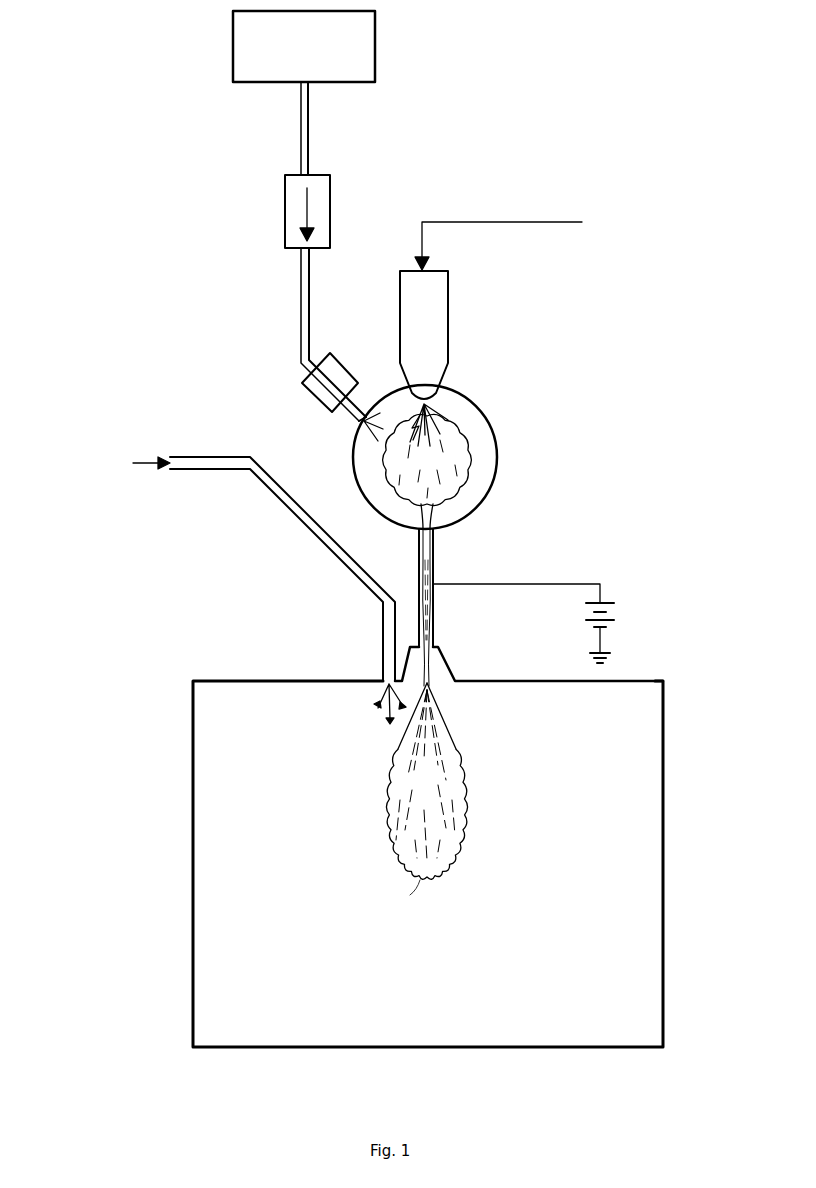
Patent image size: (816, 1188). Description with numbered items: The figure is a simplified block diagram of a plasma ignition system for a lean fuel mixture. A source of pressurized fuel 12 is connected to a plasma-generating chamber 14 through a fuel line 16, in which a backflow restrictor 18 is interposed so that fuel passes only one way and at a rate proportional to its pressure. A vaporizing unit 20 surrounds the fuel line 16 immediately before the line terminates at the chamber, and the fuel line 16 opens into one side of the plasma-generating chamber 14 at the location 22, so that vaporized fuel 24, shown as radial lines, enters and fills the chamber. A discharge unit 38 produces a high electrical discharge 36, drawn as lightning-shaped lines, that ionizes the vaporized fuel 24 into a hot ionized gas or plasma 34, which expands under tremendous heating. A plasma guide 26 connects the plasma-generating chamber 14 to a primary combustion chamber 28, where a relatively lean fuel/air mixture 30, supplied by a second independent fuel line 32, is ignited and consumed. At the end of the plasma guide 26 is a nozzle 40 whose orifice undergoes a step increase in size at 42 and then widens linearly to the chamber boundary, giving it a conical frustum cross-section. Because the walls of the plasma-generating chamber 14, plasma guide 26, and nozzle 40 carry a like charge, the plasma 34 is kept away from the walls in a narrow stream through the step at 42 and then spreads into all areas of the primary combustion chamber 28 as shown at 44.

The source of pressurized fuel 12 is at (376, 50).
The plasma-generating chamber 14 is at (498, 430).
The fuel line 16 is at (301, 297).
The backflow restrictor 18 is at (285, 214).
The vaporizing unit 20 is at (312, 398).
The fuel line opening 22 is at (350, 426).
The vaporized fuel 24 is at (380, 421).
The plasma guide 26 is at (434, 560).
The primary combustion chamber 28 is at (664, 748).
The fuel/air mixture 30 is at (150, 466).
The second independent fuel line 32 is at (343, 560).
The plasma 34 is at (462, 486).
The electrical discharge 36 is at (438, 420).
The discharge unit 38 is at (449, 343).
The nozzle 40 is at (456, 672).
The step increase in orifice size 42 is at (437, 638).
The dispersed plasma 44 is at (420, 890).